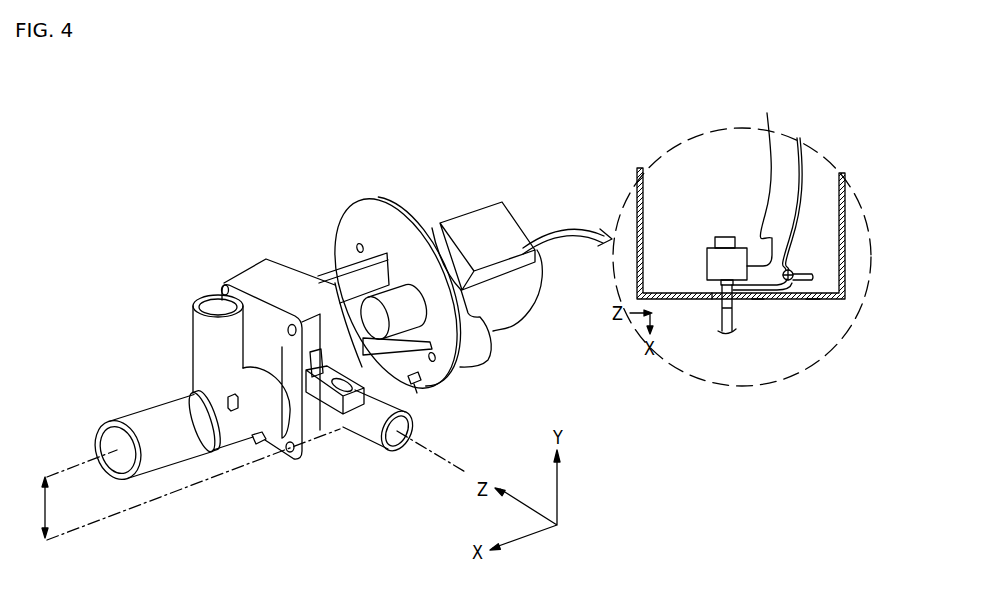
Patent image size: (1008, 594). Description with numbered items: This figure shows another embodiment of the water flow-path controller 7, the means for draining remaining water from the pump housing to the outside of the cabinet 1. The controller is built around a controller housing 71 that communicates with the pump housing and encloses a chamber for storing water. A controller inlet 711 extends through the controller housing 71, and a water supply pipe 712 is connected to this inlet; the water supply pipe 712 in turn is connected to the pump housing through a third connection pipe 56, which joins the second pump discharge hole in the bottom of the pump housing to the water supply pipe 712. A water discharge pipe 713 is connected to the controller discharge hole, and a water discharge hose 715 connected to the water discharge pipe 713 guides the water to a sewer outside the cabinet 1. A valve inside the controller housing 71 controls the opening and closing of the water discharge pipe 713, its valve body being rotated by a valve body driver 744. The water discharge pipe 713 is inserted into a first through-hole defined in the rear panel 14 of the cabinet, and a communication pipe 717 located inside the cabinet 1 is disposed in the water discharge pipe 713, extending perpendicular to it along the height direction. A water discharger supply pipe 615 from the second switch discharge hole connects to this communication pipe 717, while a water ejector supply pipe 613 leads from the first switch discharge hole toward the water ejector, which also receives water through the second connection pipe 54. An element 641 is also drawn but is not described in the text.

The water flow-path controller 7 is at (171, 193).
The controller housing 71 is at (289, 282).
The communication pipe 717 is at (196, 333).
The water discharge pipe 713 is at (147, 413).
The controller inlet 711 is at (416, 423).
The water supply pipe 712 is at (370, 437).
The valve body driver 744 is at (519, 298).
The cabinet 1 is at (637, 212).
The third connection pipe 56 is at (761, 175).
The second connection pipe 54 is at (802, 162).
The connector 641 is at (790, 270).
The water ejector supply pipe 613 is at (802, 276).
The water discharge hose 715 is at (729, 332).
The water discharger supply pipe 615 is at (758, 301).
The rear panel 14 is at (813, 302).